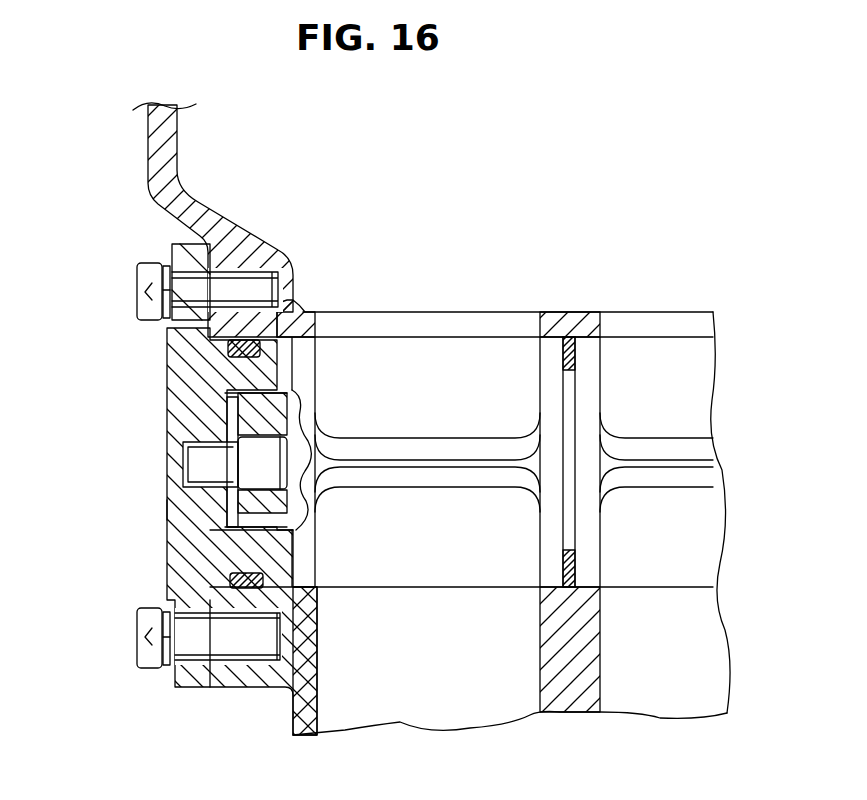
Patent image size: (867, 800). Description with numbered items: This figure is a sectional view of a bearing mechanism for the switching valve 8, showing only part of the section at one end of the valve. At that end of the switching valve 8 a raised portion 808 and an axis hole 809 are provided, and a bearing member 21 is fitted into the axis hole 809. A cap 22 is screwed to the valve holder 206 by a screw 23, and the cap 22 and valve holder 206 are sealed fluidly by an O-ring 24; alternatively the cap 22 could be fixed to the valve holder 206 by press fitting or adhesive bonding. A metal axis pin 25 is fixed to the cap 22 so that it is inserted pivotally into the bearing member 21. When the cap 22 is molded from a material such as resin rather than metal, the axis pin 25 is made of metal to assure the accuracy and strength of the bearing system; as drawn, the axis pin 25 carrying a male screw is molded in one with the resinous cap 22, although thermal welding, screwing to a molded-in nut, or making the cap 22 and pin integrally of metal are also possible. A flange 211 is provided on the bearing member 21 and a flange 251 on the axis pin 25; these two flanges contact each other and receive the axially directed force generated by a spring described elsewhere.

The valve holder 206 is at (147, 145).
The screw 23 is at (137, 265).
The O-ring 24 is at (300, 307).
The axis hole 809 is at (320, 413).
The switching valve 8 is at (606, 352).
The raised portion 808 is at (175, 362).
The flange 251 is at (227, 397).
The axis pin 25 is at (245, 452).
The flange 211 is at (167, 508).
The bearing member 21 is at (167, 540).
The cap 22 is at (167, 580).